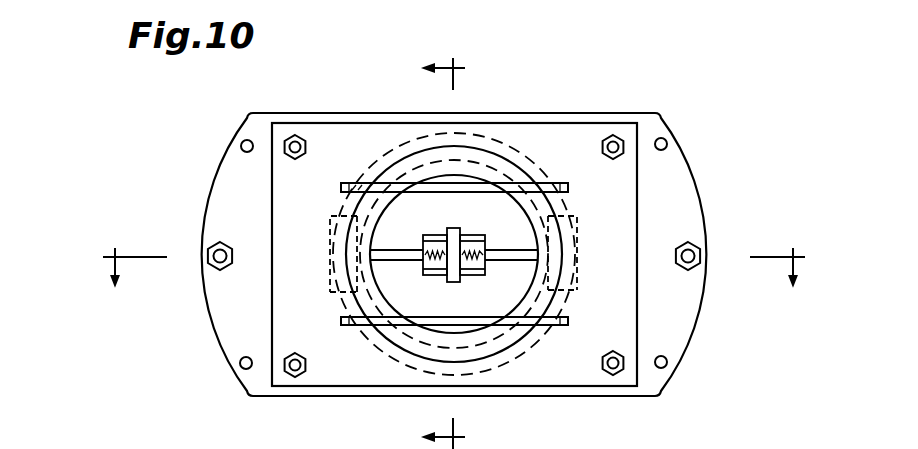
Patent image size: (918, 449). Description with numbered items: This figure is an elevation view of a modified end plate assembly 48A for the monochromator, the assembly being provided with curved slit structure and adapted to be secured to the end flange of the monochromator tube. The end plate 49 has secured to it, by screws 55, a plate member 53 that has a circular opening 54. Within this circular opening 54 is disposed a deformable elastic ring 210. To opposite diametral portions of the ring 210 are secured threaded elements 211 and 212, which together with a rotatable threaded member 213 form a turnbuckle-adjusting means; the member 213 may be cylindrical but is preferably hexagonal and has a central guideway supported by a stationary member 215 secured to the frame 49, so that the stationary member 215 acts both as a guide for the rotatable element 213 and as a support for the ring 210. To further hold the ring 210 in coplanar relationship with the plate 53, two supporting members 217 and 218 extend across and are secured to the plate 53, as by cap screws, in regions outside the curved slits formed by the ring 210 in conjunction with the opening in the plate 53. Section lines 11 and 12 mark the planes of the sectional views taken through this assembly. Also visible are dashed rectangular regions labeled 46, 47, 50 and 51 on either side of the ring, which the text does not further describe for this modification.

The section line 11- 11 is at (455, 266).
The section line 12- 12 is at (457, 253).
The right guide block 46 is at (565, 250).
The left guide block 47 is at (333, 253).
The end plate assembly 48A is at (745, 135).
The end plate 49 is at (690, 186).
The right block lower portion 50 is at (578, 290).
The left block lower portion 51 is at (330, 292).
The plate member 53 is at (637, 315).
The circular opening 54 is at (467, 145).
The screws 55 is at (610, 373).
The deformable elastic ring 210 is at (505, 166).
The threaded element 211 is at (500, 250).
The threaded element 212 is at (406, 250).
The rotatable threaded member 213 is at (428, 277).
The stationary member 215 is at (456, 283).
The supporting member 217 is at (363, 326).
The supporting member 218 is at (362, 183).